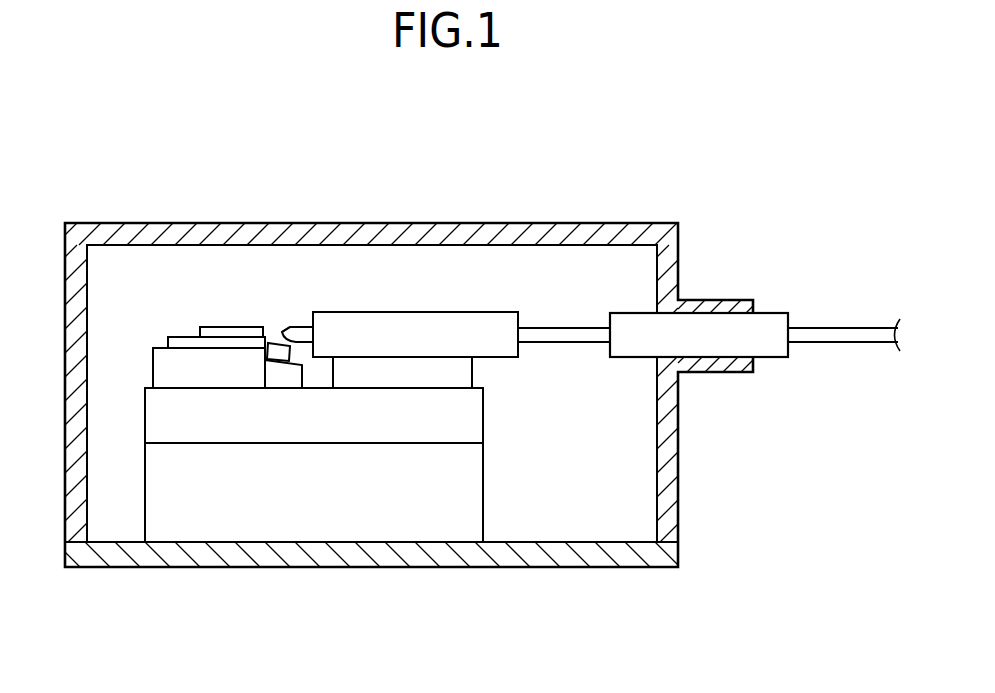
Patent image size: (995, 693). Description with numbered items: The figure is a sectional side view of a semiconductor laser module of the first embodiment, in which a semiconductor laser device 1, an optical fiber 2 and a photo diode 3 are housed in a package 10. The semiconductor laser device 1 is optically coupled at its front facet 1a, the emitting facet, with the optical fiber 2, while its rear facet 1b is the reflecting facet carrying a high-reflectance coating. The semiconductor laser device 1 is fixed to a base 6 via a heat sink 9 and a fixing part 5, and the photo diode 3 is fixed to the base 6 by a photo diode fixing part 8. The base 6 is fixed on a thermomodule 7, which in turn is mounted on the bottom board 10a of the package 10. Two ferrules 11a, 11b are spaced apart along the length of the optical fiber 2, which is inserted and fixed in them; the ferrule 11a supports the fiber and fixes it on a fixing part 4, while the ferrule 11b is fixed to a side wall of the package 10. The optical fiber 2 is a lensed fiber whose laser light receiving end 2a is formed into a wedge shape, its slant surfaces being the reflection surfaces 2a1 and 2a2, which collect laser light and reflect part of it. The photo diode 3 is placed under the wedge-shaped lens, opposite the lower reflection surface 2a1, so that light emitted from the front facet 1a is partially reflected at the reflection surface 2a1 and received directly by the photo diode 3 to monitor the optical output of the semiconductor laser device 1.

The semiconductor laser device 1 is at (224, 327).
The front facet 1a is at (268, 330).
The rear facet 1b is at (200, 327).
The optical fiber 2 is at (568, 336).
The laser light receiving end 2a is at (282, 326).
The reflection surface 2a1 is at (312, 342).
The reflection surface 2a2 is at (283, 334).
The photo diode 3 is at (285, 362).
The fixing part 4 is at (471, 367).
The fixing part 5 is at (153, 368).
The base 6 is at (155, 433).
The thermomodule 7 is at (155, 500).
The photo diode fixing part 8 is at (267, 373).
The heat sink 9 is at (178, 337).
The package 10 is at (584, 231).
The bottom board 10a is at (415, 567).
The ferrule 11a is at (425, 324).
The ferrule 11b is at (767, 324).